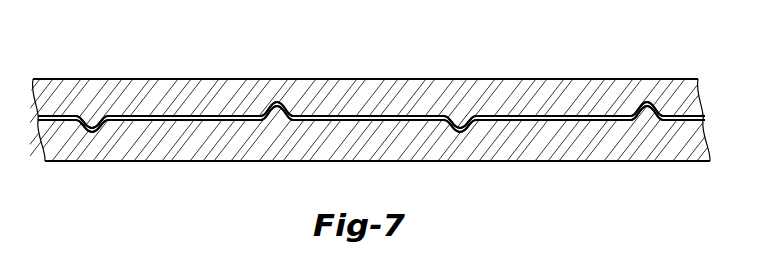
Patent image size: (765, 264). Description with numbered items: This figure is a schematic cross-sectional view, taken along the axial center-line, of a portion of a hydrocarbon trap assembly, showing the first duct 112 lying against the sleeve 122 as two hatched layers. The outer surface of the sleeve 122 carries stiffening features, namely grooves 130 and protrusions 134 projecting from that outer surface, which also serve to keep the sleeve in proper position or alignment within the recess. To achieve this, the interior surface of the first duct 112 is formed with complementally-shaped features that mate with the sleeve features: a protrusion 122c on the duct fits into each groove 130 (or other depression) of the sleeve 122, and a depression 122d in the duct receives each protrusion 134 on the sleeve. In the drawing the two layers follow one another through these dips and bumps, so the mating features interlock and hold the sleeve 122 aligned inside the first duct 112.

The first duct 112 is at (140, 79).
The sleeve 122 is at (141, 161).
The groove 130 is at (90, 125).
The protrusion 134 is at (278, 103).
The protrusion 122c is at (95, 131).
The depression 122d is at (281, 105).